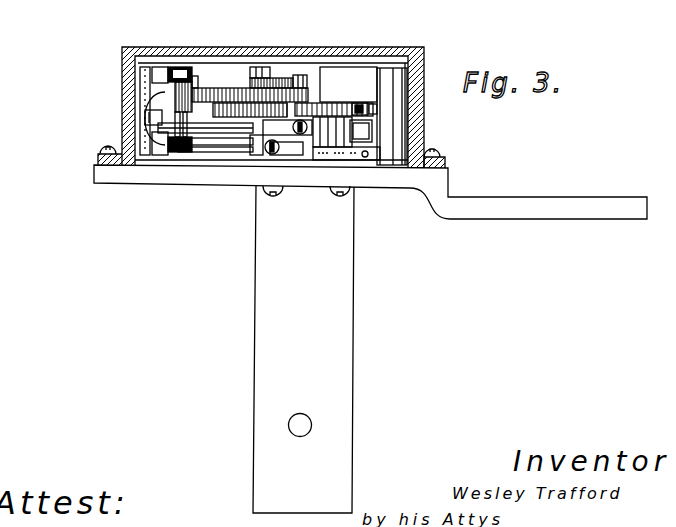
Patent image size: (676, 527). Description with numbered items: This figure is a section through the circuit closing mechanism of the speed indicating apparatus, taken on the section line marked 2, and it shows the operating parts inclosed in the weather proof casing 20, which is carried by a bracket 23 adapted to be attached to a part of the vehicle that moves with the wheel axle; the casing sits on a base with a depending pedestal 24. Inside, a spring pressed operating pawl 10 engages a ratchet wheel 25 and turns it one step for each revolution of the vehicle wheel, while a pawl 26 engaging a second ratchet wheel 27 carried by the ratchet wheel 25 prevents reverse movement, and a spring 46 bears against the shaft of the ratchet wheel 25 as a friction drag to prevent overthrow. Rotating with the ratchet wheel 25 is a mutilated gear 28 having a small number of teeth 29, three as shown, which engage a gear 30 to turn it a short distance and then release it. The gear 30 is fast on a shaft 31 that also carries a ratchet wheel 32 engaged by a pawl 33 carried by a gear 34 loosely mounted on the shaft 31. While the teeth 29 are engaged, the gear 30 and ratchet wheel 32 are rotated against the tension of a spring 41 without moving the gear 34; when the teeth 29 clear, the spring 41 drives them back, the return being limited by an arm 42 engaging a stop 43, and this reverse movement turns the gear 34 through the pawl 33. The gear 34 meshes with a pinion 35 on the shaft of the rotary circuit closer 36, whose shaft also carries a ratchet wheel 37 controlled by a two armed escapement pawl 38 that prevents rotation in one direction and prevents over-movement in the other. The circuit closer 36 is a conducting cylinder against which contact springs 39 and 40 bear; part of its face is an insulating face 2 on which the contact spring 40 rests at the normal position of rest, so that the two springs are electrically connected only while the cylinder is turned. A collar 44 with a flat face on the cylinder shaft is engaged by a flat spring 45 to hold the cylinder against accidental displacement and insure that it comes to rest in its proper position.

The insulating face 2 is at (78, 67).
The operating pawl 10 is at (361, 131).
The casing 20 is at (135, 48).
The bracket 23 is at (566, 200).
The pedestal 24 is at (303, 349).
The ratchet wheel 25 is at (337, 123).
The pawl 26 is at (377, 145).
The second ratchet wheel 27 is at (320, 150).
The mutilated gear 28 is at (322, 112).
The teeth 29 is at (360, 112).
The gear 30 is at (225, 138).
The shaft 31 is at (253, 69).
The ratchet wheel 32 is at (205, 92).
The pawl 33 is at (287, 77).
The gear 34 is at (197, 92).
The pinion 35 is at (148, 88).
The circuit closer 36 is at (177, 130).
The ratchet wheel 37 is at (140, 117).
The escapement pawl 38 is at (145, 105).
The contact spring 39 is at (230, 118).
The contact spring 40 is at (222, 150).
The spring 41 is at (242, 152).
The arm 42 is at (273, 153).
The stop 43 is at (262, 153).
The collar 44 is at (187, 70).
The flat spring 45 is at (172, 68).
The spring 46 is at (365, 75).